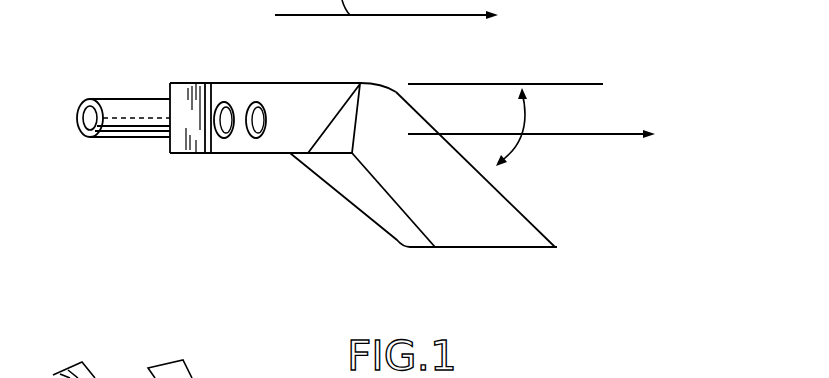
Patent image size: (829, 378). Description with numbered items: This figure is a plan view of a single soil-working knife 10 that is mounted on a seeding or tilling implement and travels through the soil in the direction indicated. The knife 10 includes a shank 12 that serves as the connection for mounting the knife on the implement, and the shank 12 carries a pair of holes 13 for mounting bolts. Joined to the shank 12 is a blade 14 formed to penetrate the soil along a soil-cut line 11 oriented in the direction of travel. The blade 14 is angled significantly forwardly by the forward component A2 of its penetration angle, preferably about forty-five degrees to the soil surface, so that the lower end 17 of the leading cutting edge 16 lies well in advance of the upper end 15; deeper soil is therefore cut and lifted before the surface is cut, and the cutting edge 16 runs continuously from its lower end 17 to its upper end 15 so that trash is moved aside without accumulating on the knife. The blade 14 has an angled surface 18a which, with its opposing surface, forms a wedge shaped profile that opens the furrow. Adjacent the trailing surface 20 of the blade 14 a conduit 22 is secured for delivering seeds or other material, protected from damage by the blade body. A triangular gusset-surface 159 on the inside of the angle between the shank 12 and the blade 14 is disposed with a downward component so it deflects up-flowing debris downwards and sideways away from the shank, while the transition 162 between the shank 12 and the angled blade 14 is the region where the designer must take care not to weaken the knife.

The single knife 10 is at (132, 53).
The soil-cut line 11 is at (610, 134).
The shank 12 is at (292, 103).
The holes 13 is at (255, 101).
The blade 14 is at (432, 183).
The upper end of the cutting edge 15 is at (396, 88).
The leading cutting edge 16 is at (518, 208).
The lower end of the cutting edge 17 is at (555, 247).
The angled surface 18a is at (477, 225).
The trailing surface 20 is at (433, 247).
The conduit 22 is at (363, 192).
The triangular gusset-surface 159 is at (345, 128).
The transition 162 is at (300, 176).
The forward component of angle A A2 is at (522, 135).